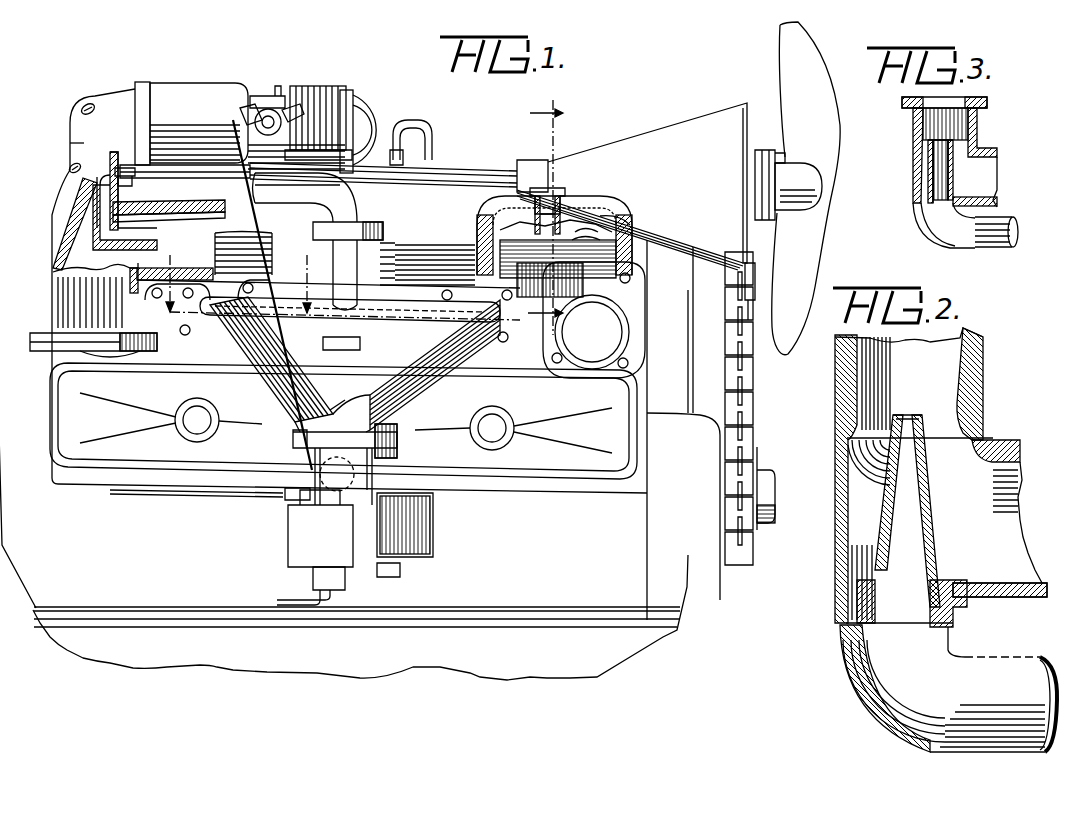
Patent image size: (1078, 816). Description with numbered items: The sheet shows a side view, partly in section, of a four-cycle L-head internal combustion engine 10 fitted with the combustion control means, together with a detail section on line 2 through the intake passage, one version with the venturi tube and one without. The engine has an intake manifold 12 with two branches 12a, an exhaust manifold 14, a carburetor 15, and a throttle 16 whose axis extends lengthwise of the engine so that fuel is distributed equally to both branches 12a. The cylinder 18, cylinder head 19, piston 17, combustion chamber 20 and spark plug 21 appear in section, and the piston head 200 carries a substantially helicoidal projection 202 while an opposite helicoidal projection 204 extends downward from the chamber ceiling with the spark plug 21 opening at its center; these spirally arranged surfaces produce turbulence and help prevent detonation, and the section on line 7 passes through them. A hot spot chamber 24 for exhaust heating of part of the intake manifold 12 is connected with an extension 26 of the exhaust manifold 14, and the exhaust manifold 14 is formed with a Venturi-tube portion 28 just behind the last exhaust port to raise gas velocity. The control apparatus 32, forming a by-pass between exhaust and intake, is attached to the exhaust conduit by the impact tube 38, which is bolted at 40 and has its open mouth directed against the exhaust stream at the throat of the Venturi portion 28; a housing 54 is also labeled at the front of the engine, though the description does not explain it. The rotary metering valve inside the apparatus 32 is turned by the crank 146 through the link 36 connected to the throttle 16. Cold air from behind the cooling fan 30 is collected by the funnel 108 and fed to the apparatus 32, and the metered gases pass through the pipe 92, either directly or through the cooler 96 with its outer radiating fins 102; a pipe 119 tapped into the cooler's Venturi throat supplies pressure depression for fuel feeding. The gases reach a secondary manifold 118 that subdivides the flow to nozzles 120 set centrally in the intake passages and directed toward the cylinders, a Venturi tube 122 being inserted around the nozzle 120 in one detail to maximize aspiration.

In FIG. 1, the section line 2— 2 is at (286, 268).
In FIG. 1, the section line 7— 7 is at (545, 213).
In FIG. 1, the internal combustion engine 10 is at (50, 290).
In FIG. 1, the intake manifold 12 is at (236, 354).
In FIG. 2, the intake manifold 12 is at (973, 481).
In FIG. 1, the intake manifold branches 12a is at (262, 385).
In FIG. 1, the exhaust manifold 14 is at (192, 209).
In FIG. 1, the carburetor 15 is at (288, 539).
In FIG. 1, the throttle 16 is at (386, 452).
In FIG. 1, the piston 17 is at (477, 271).
In FIG. 1, the cylinder 18 is at (477, 260).
In FIG. 1, the cylinder head 19 is at (478, 222).
In FIG. 1, the combustion chamber 20 is at (511, 230).
In FIG. 3, the combustion chamber 20 is at (980, 141).
In FIG. 1, the spark plug 21 is at (584, 226).
In FIG. 1, the hot spot chamber 24 is at (294, 407).
In FIG. 1, the exhaust manifold extension 26 is at (436, 308).
In FIG. 1, the Venturi-tube portion 28 is at (158, 217).
In FIG. 1, the cooling fan 30 is at (800, 264).
In FIG. 1, the control apparatus 32 is at (203, 94).
In FIG. 1, the link 36 is at (262, 244).
In FIG. 1, the impact tube 38 is at (148, 241).
In FIG. 1, the bolted attachment 40 is at (124, 172).
In FIG. 1, the housing 54 is at (83, 147).
In FIG. 1, the pipe 92 is at (283, 207).
In FIG. 1, the cooler 96 is at (366, 97).
In FIG. 1, the outer heat radiating fins 102 is at (334, 90).
In FIG. 1, the funnel 108 is at (703, 120).
In FIG. 1, the secondary manifold 118 is at (404, 272).
In FIG. 3, the secondary manifold 118 is at (985, 237).
In FIG. 2, the secondary manifold 118 is at (950, 740).
In FIG. 1, the pipe 119 is at (462, 172).
In FIG. 3, the nozzle 120 is at (938, 140).
In FIG. 2, the nozzle 120 is at (940, 457).
In FIG. 2, the Venturi tube 122 is at (968, 355).
In FIG. 1, the crank 146 is at (237, 112).
In FIG. 1, the piston head 200 is at (633, 223).
In FIG. 1, the helicoidal projection 202 is at (594, 232).
In FIG. 1, the helicoidal projection 204 is at (590, 226).